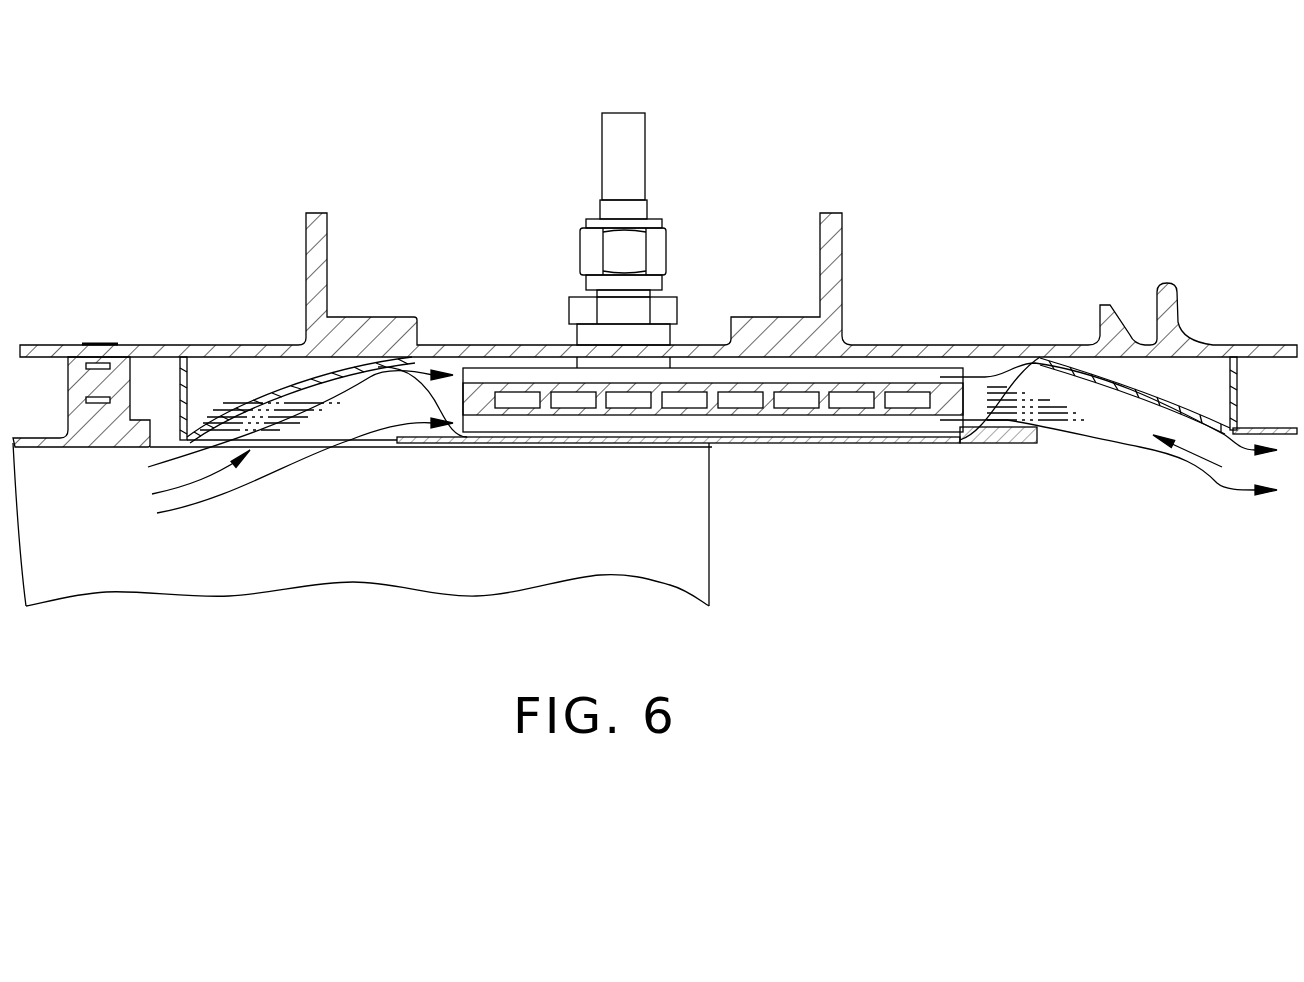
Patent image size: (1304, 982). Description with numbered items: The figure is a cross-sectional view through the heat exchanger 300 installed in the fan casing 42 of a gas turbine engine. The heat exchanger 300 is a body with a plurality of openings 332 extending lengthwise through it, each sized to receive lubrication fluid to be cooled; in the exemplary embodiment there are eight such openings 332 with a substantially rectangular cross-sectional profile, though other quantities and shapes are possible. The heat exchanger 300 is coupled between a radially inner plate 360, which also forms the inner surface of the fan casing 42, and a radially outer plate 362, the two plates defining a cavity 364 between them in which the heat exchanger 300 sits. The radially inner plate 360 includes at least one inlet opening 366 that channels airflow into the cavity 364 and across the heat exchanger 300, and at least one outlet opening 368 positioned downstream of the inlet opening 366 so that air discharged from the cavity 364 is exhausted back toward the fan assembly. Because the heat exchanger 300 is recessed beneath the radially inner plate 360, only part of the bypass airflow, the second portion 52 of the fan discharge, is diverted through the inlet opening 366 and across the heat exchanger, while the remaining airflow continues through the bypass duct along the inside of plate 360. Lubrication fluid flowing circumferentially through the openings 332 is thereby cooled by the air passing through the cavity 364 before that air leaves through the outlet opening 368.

The heat exchanger 300 is at (1012, 285).
The fan casing 42 is at (740, 330).
The second portion of the airflow 52 is at (200, 505).
The openings 332 is at (643, 408).
The radially inner plate 360 is at (840, 443).
The radially outer plate 362 is at (243, 405).
The cavity 364 is at (342, 360).
The inlet opening 366 is at (176, 480).
The outlet opening 368 is at (1213, 460).